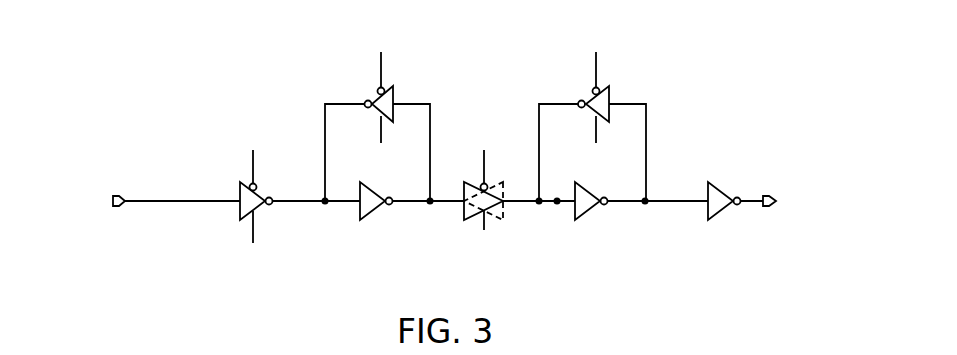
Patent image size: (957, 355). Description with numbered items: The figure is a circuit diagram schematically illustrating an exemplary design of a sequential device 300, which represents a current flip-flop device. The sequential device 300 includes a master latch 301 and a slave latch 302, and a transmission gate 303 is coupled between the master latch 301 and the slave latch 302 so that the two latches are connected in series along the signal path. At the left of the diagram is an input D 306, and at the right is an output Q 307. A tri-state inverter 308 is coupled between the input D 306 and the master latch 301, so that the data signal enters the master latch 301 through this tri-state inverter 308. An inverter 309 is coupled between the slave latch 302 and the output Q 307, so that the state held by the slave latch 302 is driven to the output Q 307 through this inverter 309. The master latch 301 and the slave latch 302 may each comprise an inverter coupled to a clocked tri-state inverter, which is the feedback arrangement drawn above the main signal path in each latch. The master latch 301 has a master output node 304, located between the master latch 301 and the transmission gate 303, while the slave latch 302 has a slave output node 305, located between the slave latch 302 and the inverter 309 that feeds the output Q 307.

The sequential device 300 is at (748, 40).
The master latch 301 is at (319, 64).
The slave latch 302 is at (638, 44).
The transmission gate 303 is at (488, 80).
The master output node 304 is at (414, 229).
The slave output node 305 is at (648, 228).
The input D 306 is at (96, 172).
The output Q 307 is at (798, 165).
The tri-state inverter 308 is at (233, 242).
The inverter 309 is at (714, 155).